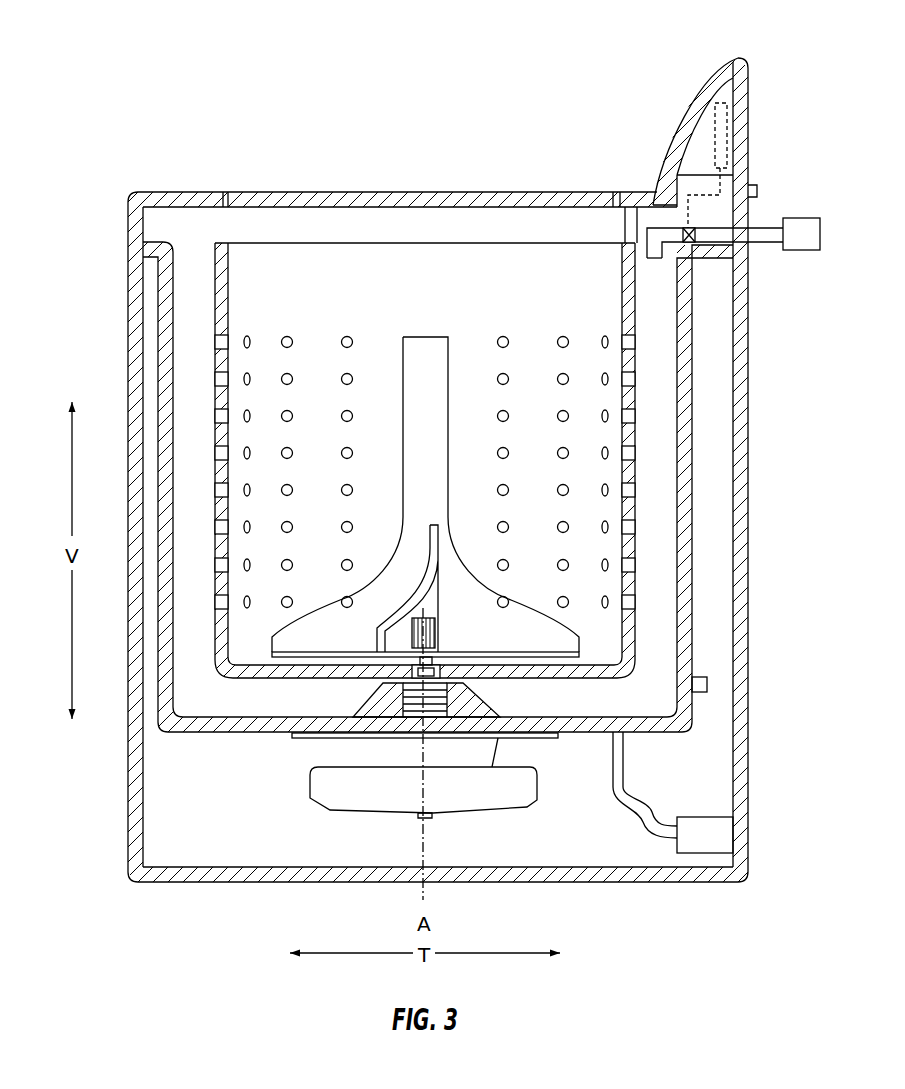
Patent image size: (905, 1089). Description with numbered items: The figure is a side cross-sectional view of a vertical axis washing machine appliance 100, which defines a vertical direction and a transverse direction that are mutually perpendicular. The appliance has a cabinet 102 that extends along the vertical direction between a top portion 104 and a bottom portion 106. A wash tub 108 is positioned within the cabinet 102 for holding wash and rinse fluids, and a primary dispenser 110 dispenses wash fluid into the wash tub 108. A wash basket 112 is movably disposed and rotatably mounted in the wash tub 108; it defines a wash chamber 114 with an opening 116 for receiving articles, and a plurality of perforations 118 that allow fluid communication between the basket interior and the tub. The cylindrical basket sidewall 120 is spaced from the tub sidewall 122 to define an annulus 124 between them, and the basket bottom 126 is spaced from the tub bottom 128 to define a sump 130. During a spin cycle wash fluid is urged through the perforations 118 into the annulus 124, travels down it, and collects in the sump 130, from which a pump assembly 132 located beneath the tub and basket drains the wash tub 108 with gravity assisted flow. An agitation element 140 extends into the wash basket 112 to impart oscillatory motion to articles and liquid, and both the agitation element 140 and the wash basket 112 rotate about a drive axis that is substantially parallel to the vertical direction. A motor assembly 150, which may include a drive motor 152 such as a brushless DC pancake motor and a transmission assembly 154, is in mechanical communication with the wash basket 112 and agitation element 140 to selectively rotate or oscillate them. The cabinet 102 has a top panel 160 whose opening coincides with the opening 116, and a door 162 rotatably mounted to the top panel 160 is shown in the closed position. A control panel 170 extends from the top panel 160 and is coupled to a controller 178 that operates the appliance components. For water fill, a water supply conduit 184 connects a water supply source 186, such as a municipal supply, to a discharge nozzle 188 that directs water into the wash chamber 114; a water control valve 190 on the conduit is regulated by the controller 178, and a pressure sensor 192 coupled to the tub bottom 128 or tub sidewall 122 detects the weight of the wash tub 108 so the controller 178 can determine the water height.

The washing machine appliance 100 is at (160, 86).
The cabinet 102 is at (135, 318).
The top portion 104 is at (118, 198).
The bottom portion 106 is at (113, 883).
The wash tub 108 is at (686, 597).
The primary dispenser 110 is at (636, 228).
The wash basket 112 is at (215, 268).
The wash chamber 114 is at (285, 292).
The opening 116 is at (500, 239).
The perforations 118 is at (354, 337).
The basket sidewall 120 is at (641, 355).
The tub sidewall 122 is at (696, 425).
The annulus 124 is at (661, 493).
The basket bottom 126 is at (241, 685).
The tub bottom 128 is at (640, 736).
The sump 130 is at (270, 720).
The pump assembly 132 is at (659, 843).
The agitation element 140 is at (430, 343).
The motor assembly 150 is at (281, 779).
The drive motor 152 is at (530, 785).
The transmission assembly 154 is at (480, 740).
The top panel 160 is at (163, 192).
The door 162 is at (327, 192).
The control panel 170 is at (686, 104).
The controller 178 is at (735, 108).
The water supply conduit 184 is at (768, 246).
The water supply source 186 is at (816, 246).
The discharge nozzle 188 is at (656, 266).
The water control valve 190 is at (697, 233).
The pressure sensor 192 is at (712, 685).